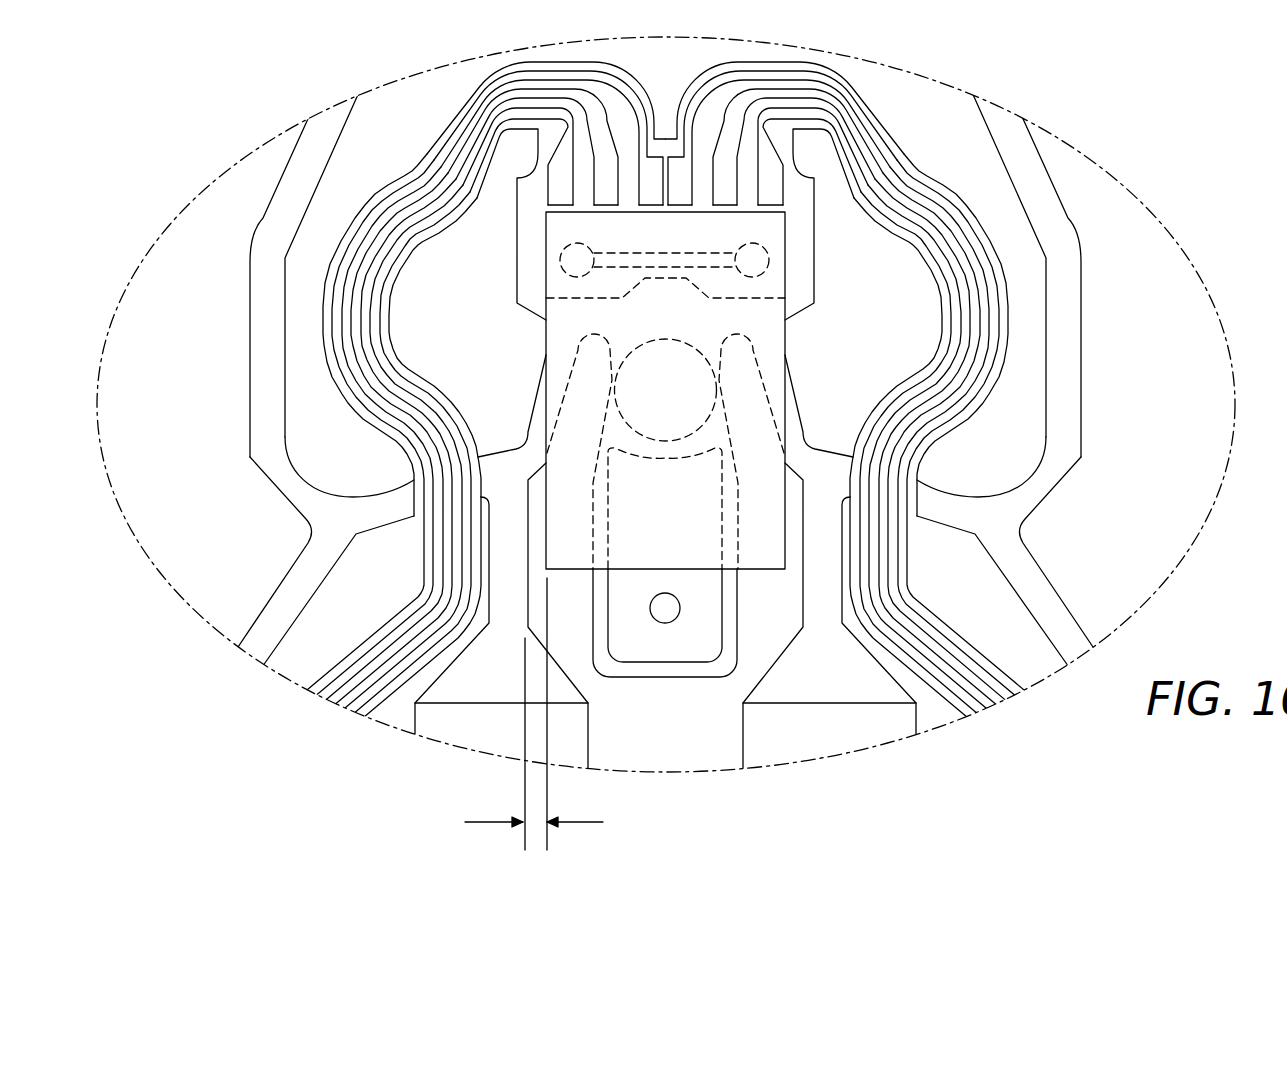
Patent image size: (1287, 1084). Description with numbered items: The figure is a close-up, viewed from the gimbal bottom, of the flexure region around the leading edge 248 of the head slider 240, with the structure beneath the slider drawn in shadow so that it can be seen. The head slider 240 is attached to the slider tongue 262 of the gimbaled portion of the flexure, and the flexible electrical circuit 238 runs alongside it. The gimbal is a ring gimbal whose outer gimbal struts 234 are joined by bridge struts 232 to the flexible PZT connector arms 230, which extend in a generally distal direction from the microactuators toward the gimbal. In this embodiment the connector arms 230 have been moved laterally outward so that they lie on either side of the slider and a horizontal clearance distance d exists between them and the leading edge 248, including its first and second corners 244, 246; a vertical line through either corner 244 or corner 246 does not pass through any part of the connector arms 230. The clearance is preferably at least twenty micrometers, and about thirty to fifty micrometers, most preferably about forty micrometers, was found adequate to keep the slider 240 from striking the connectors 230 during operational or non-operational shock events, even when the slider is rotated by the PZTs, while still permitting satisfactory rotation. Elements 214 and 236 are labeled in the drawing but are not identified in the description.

The contact pads 214 is at (468, 728).
The PZT connector arms 230 is at (503, 570).
The bridge struts 232 is at (392, 486).
The outer gimbal struts 234 is at (262, 222).
The second tab 236 is at (857, 670).
The flexible electrical circuit 238 is at (925, 412).
The head slider 240 is at (787, 338).
The first corner 244 is at (783, 569).
The second corner 246 is at (548, 569).
The leading edge 248 is at (688, 570).
The slider tongue 262 is at (662, 664).